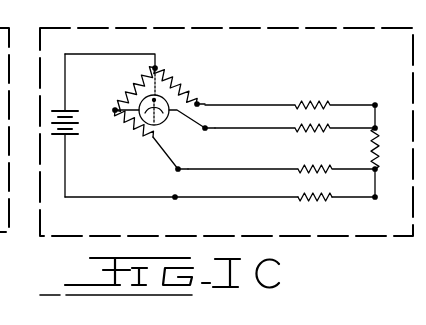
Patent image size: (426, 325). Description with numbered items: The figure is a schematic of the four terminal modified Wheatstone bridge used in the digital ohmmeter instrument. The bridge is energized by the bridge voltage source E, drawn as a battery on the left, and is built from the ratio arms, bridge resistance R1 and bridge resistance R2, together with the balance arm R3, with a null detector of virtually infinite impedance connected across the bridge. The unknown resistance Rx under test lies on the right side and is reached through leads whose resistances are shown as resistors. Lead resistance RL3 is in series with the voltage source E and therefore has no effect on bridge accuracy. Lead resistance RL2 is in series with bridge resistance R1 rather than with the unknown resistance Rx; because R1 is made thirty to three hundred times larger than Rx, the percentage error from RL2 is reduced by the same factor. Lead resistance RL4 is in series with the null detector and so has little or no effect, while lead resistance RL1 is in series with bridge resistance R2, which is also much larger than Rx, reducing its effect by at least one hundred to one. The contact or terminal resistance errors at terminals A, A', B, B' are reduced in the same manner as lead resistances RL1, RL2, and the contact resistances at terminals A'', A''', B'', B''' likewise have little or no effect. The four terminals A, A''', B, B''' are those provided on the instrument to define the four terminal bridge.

The bridge voltage source E is at (61, 125).
The bridge resistance R1 is at (130, 135).
The bridge resistance R2 is at (182, 82).
The balance arm R3 is at (130, 89).
The unknown resistance Rx is at (393, 148).
The lead resistance RL1 is at (290, 89).
The lead resistance RL2 is at (281, 156).
The lead resistance RL3 is at (312, 183).
The lead resistance RL4 is at (304, 118).
The terminal A is at (211, 91).
The terminal A' is at (391, 91).
The terminal A'' is at (393, 114).
The terminal A''' is at (214, 138).
The terminal B is at (190, 178).
The terminal B' is at (391, 171).
The terminal B'' is at (391, 206).
The terminal B''' is at (194, 207).